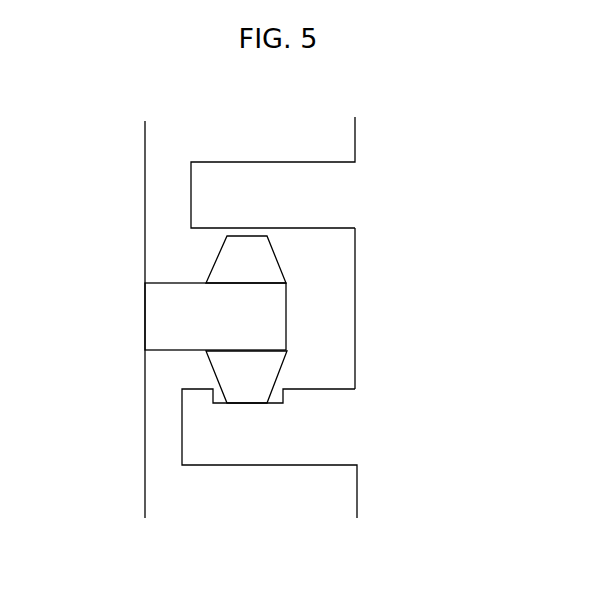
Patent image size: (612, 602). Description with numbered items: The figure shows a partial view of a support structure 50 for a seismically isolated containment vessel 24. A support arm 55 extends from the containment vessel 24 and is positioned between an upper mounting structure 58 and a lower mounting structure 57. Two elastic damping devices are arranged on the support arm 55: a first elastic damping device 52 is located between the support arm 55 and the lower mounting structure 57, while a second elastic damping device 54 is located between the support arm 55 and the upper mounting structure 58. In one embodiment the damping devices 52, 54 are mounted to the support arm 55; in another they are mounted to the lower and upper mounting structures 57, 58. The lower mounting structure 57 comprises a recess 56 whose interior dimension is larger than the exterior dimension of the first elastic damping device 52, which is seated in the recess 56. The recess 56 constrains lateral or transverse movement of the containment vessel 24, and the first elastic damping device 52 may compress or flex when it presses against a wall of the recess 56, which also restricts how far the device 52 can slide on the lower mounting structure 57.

The support structure 50 is at (98, 99).
The containment vessel 24 is at (90, 319).
The upper mounting structure 58 is at (273, 171).
The first elastic damping device 52 is at (369, 308).
The lower mounting structure 57 is at (269, 455).
The second elastic damping device 54 is at (183, 251).
The support arm 55 is at (178, 316).
The recess 56 is at (254, 400).